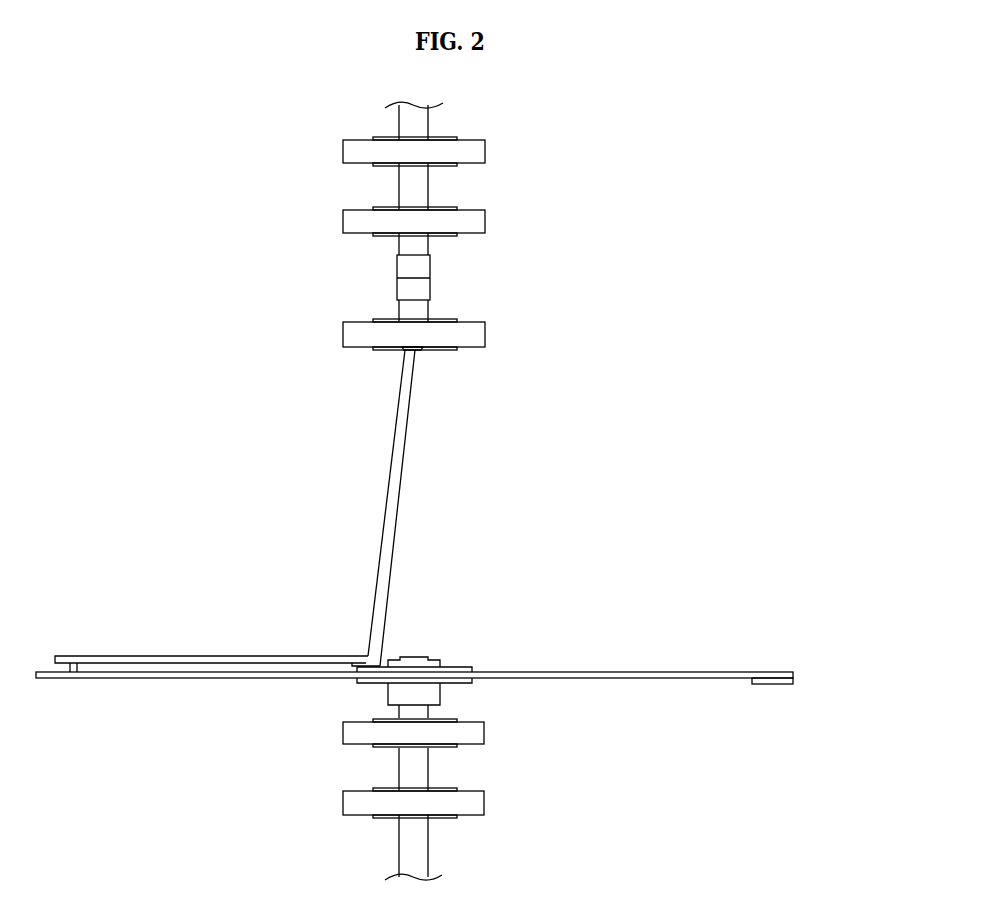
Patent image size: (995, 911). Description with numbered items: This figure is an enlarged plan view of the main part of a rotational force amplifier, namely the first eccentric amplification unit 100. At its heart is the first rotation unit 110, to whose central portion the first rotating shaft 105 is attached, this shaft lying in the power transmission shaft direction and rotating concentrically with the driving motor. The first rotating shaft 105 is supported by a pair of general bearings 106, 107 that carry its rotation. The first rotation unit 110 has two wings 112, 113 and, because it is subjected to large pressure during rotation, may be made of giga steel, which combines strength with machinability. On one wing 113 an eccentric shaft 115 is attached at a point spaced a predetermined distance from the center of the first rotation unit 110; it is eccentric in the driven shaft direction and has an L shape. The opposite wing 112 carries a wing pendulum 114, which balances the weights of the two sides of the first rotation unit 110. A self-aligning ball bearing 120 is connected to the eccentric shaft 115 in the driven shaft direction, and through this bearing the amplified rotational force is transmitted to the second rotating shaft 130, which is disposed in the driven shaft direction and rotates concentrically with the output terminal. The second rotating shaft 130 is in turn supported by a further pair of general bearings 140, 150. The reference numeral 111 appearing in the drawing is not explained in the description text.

The first eccentric amplification unit 100 is at (714, 174).
The first rotating shaft 105 is at (428, 848).
The general bearing 106 is at (485, 800).
The general bearing 107 is at (485, 730).
The first rotation unit 110 is at (790, 714).
The hub 111 is at (454, 665).
The wing 112 is at (643, 670).
The wing 113 is at (185, 678).
The wing pendulum 114 is at (800, 680).
The eccentric shaft 115 is at (408, 455).
The self-aligning ball bearing 120 is at (485, 322).
The second rotating shaft 130 is at (430, 268).
The general bearing 140 is at (485, 210).
The general bearing 150 is at (485, 140).